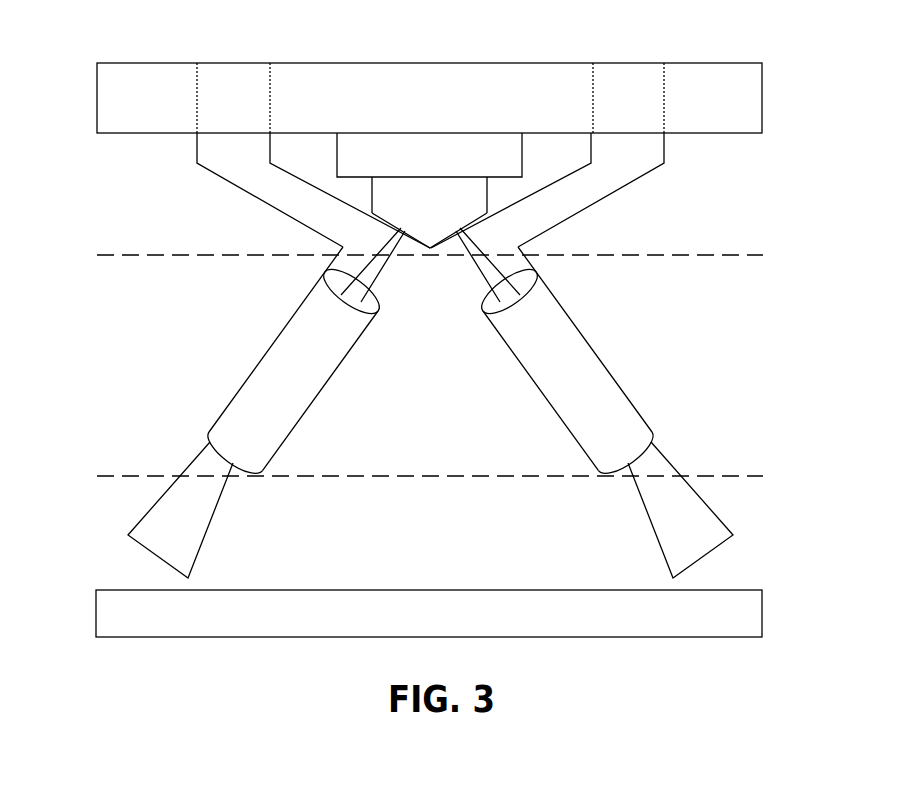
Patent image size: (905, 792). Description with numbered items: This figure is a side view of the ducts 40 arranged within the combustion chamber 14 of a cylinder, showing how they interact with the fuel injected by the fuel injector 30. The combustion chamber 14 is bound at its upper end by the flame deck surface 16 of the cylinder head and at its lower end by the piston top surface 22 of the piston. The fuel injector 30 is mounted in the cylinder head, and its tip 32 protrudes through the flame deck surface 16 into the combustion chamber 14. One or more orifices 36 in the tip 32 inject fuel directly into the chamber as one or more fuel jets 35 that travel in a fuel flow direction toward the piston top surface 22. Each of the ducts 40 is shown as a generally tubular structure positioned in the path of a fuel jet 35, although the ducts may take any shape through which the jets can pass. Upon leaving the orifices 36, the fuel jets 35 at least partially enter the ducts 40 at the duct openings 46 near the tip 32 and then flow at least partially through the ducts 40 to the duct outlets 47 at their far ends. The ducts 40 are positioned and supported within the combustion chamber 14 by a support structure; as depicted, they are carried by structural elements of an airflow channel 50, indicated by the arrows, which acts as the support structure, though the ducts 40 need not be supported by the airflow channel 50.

The combustion chamber 14 is at (125, 202).
The flame deck surface 16 is at (687, 125).
The piston top surface 22 is at (418, 590).
The fuel injector 30 is at (418, 155).
The tip 32 is at (452, 190).
The fuel jets 35 is at (182, 538).
The orifices 36 is at (461, 228).
The ducts 40 is at (718, 340).
The duct openings 46 is at (370, 302).
The duct outlets 47 is at (230, 458).
The airflow channel 50 is at (232, 163).